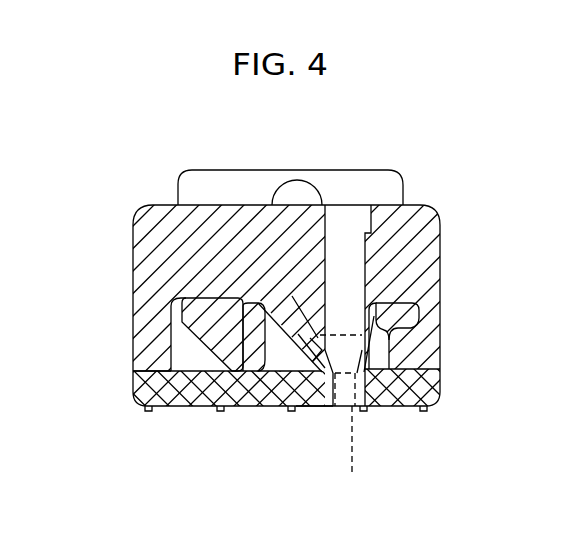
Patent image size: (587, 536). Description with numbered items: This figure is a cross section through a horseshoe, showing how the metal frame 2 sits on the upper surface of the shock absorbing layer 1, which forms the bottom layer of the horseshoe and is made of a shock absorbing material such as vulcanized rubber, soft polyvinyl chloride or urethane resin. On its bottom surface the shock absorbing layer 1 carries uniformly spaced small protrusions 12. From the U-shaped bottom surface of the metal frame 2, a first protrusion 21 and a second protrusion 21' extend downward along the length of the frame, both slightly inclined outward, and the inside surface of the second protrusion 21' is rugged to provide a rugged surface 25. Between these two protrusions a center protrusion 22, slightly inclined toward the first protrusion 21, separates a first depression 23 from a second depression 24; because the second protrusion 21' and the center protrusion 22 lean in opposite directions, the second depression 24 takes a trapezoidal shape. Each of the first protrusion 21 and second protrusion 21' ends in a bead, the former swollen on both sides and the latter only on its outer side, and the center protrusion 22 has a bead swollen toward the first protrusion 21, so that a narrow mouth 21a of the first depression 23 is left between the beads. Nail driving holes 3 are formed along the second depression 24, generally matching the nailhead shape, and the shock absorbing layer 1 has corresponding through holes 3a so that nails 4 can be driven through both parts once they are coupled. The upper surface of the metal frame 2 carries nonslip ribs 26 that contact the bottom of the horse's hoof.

The shock absorbing layer 1 is at (440, 240).
The metal frame 2 is at (440, 382).
The nail driving holes 3 is at (337, 410).
The through holes 3a is at (362, 217).
The nails 4 is at (358, 454).
The small protrusions 12 is at (207, 177).
The first protrusion 21 is at (147, 334).
The narrow mouth 21a is at (218, 300).
The second protrusion 21' is at (442, 319).
The center protrusion 22 is at (262, 303).
The first depression 23 is at (160, 372).
The second depression 24 is at (310, 408).
The rugged surface 25 is at (367, 410).
The nonslip ribs 26 is at (220, 411).